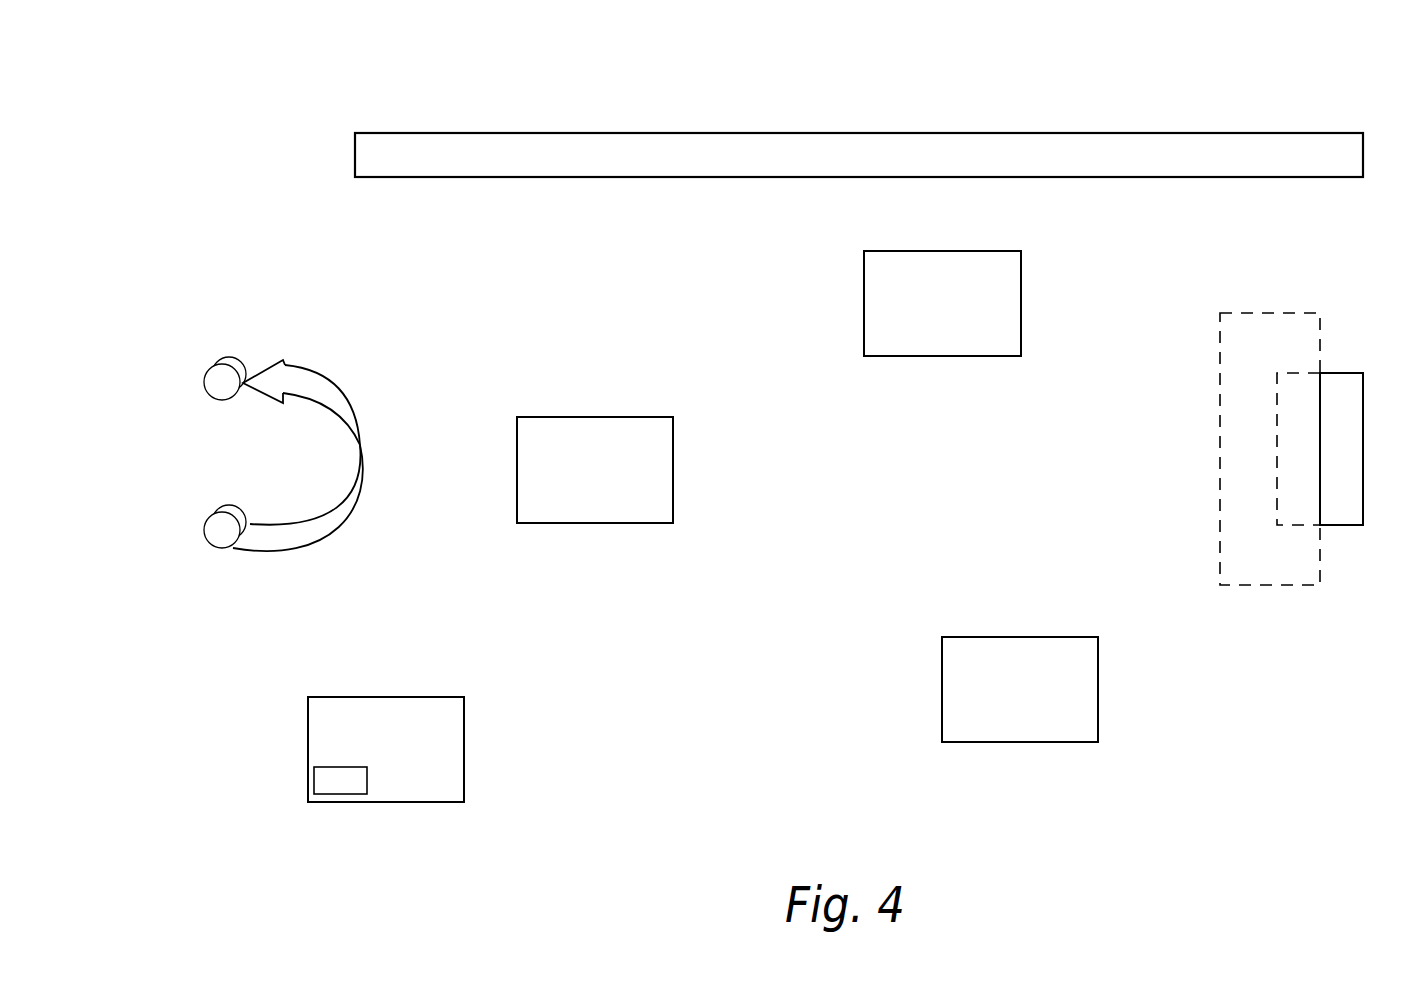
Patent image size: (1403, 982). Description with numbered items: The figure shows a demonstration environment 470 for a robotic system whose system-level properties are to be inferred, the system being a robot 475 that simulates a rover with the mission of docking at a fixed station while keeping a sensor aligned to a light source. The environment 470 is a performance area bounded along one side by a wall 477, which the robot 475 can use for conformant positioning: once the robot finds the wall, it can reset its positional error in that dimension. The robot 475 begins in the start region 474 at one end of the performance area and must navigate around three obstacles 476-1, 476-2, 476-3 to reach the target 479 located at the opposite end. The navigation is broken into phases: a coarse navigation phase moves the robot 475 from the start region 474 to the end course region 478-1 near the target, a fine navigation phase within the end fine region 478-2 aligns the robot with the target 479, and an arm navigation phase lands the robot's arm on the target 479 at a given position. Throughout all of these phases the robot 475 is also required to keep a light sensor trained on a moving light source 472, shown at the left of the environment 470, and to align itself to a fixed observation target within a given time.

The environment 470 is at (265, 73).
The moving light source 472 is at (229, 357).
The start region 474 is at (446, 697).
The robot 475 is at (314, 778).
The obstacle 476-1 is at (655, 417).
The obstacle 476-2 is at (1001, 251).
The obstacle 476-3 is at (1080, 637).
The wall 477 is at (1305, 133).
The end course region 478-1 is at (1301, 313).
The end fine region 478-2 is at (1300, 373).
The target 479 is at (1347, 373).